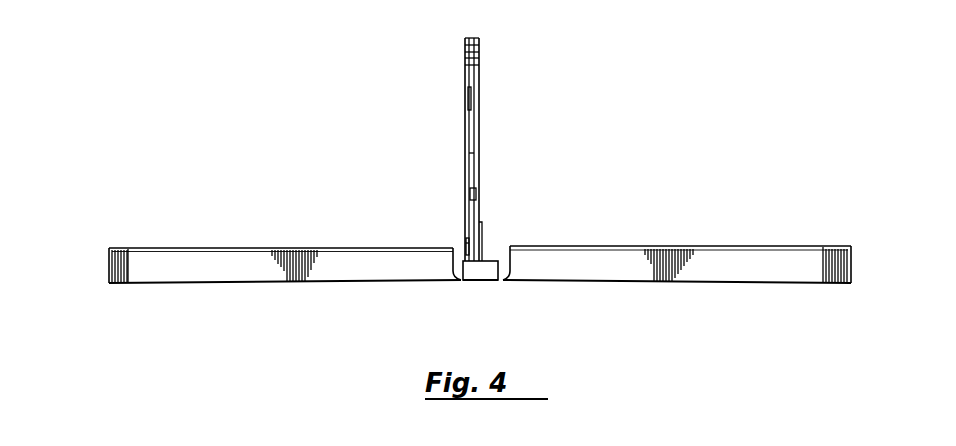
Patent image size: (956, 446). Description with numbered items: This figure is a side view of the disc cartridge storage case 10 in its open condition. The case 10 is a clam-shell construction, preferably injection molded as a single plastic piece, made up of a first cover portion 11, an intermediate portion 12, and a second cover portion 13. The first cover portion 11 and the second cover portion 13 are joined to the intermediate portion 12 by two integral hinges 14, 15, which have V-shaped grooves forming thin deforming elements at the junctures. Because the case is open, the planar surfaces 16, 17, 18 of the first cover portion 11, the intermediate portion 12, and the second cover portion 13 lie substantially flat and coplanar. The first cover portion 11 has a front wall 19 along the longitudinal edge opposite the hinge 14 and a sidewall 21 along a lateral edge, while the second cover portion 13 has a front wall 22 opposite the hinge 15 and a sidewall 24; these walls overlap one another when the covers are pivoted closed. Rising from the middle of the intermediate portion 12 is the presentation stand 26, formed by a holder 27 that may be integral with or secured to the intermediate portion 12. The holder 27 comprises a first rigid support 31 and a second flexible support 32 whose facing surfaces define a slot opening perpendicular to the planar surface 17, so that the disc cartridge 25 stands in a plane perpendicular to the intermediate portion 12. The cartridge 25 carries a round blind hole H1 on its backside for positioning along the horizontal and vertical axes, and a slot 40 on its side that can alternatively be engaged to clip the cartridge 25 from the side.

The disc cartridge storage case 10 is at (292, 184).
The first cover portion 11 is at (740, 268).
The intermediate portion 12 is at (475, 268).
The second cover portion 13 is at (232, 262).
The hinge 14 is at (500, 281).
The hinge 15 is at (458, 281).
The planar surface 16 is at (650, 282).
The planar surface 17 is at (494, 283).
The planar surface 18 is at (318, 282).
The front wall 19 is at (853, 266).
The sidewall 21 is at (714, 258).
The front wall 22 is at (112, 257).
The sidewall 24 is at (211, 262).
The disc cartridge 25 is at (481, 47).
The presentation stand 26 is at (466, 147).
The holder 27 is at (483, 222).
The first rigid support 31 is at (481, 249).
The second flexible support 32 is at (466, 243).
The slot 40 is at (470, 190).
The blind hole H1 is at (466, 240).